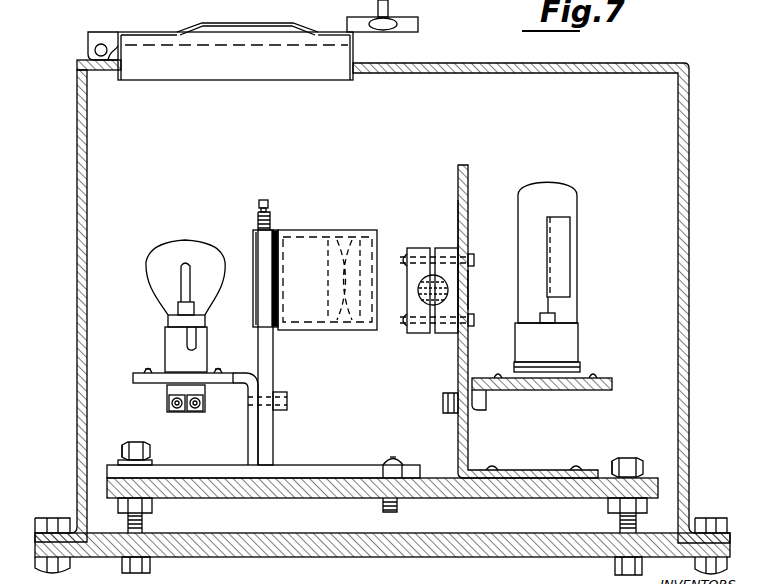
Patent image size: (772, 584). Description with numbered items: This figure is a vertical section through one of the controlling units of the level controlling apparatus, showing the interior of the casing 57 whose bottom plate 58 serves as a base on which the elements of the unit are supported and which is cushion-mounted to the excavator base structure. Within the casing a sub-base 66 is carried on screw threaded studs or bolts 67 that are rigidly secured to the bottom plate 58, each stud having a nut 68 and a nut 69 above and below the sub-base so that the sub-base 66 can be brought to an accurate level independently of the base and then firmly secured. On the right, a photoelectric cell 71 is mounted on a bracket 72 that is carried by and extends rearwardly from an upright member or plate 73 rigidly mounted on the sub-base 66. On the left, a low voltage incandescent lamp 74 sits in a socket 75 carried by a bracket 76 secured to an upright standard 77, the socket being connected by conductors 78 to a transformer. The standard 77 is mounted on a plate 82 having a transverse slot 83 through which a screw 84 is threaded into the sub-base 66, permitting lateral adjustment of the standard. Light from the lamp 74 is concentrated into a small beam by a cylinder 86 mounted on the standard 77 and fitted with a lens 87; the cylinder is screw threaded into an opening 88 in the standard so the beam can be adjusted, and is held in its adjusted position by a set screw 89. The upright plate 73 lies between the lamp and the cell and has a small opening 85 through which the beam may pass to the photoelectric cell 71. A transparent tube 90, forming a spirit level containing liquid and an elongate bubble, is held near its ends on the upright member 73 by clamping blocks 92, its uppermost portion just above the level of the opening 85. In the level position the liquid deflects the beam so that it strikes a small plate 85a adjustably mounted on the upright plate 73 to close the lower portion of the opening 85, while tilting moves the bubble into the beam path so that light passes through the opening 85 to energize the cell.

The casing 57 is at (88, 163).
The bottom plate 58 is at (525, 556).
The sub-base 66 is at (526, 496).
The screw threaded studs or bolts 67 is at (137, 445).
The nut 68 is at (152, 504).
The nut 69 is at (128, 452).
The photoelectric cell 71 is at (562, 260).
The bracket 72 is at (545, 391).
The upright member or plate 73 is at (458, 362).
The low voltage incandescent lamp 74 is at (163, 256).
The socket 75 is at (172, 343).
The bracket 76 is at (232, 383).
The upright member or standard 77 is at (264, 437).
The conductors 78 is at (195, 412).
The plate 82 is at (327, 465).
The transverse slot 83 is at (380, 478).
The screw 84 is at (398, 457).
The opening 85 is at (466, 290).
The plate 85a is at (458, 283).
The cylinder 86 is at (300, 232).
The lens 87 is at (362, 240).
The screw threaded opening 88 is at (275, 230).
The set screw 89 is at (262, 200).
The transparent tube 90 is at (418, 298).
The clamping block 92 is at (416, 247).